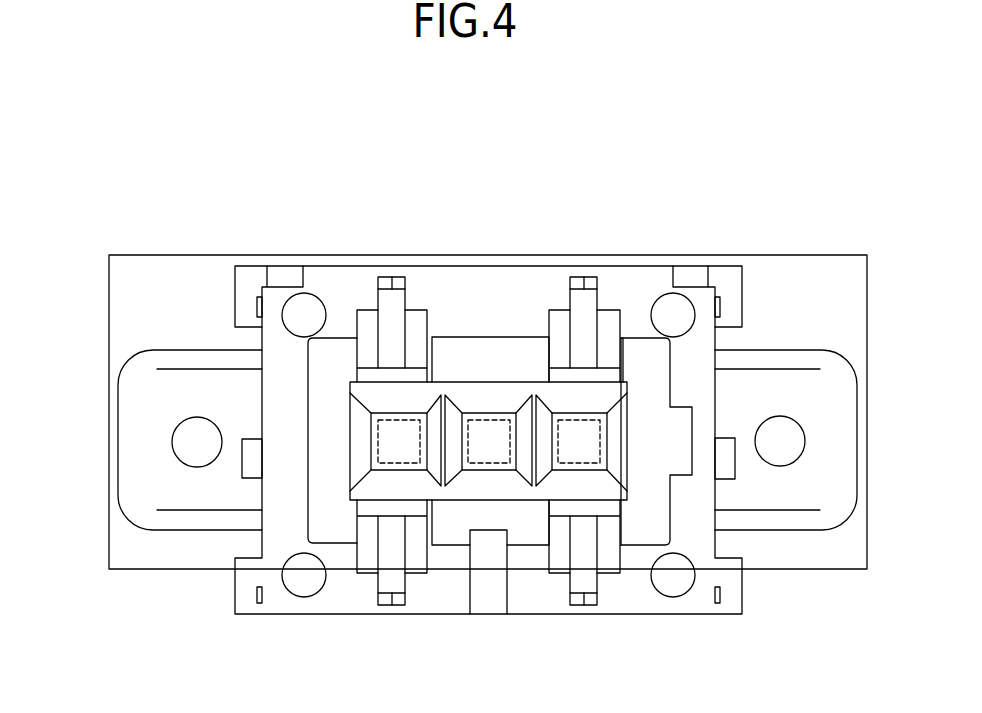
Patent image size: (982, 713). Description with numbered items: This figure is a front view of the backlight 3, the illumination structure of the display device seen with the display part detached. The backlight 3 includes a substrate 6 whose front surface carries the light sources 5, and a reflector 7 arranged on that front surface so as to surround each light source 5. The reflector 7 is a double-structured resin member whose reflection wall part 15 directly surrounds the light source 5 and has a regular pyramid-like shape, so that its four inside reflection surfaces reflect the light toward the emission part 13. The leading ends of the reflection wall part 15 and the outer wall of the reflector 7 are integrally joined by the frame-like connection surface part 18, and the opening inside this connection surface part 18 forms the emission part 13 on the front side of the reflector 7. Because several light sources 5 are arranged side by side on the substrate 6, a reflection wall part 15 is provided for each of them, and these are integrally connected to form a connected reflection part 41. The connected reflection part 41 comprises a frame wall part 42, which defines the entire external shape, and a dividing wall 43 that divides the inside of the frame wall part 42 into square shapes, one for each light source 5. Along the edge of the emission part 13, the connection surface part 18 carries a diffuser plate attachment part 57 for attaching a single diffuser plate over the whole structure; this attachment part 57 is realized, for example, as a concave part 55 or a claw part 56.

The backlight 3 is at (826, 234).
The light source 5 is at (585, 450).
The substrate 6 is at (725, 255).
The reflector 7 is at (635, 263).
The emission part 13 is at (457, 488).
The reflection wall part 15 is at (350, 435).
The connection surface part 18 is at (340, 588).
The connected reflection part 41 is at (450, 173).
The frame wall part 42 is at (500, 403).
The dividing wall 43 is at (444, 423).
The concave part 55 is at (346, 350).
The claw part 56 is at (385, 343).
The diffuser plate attachment part 57 is at (290, 173).